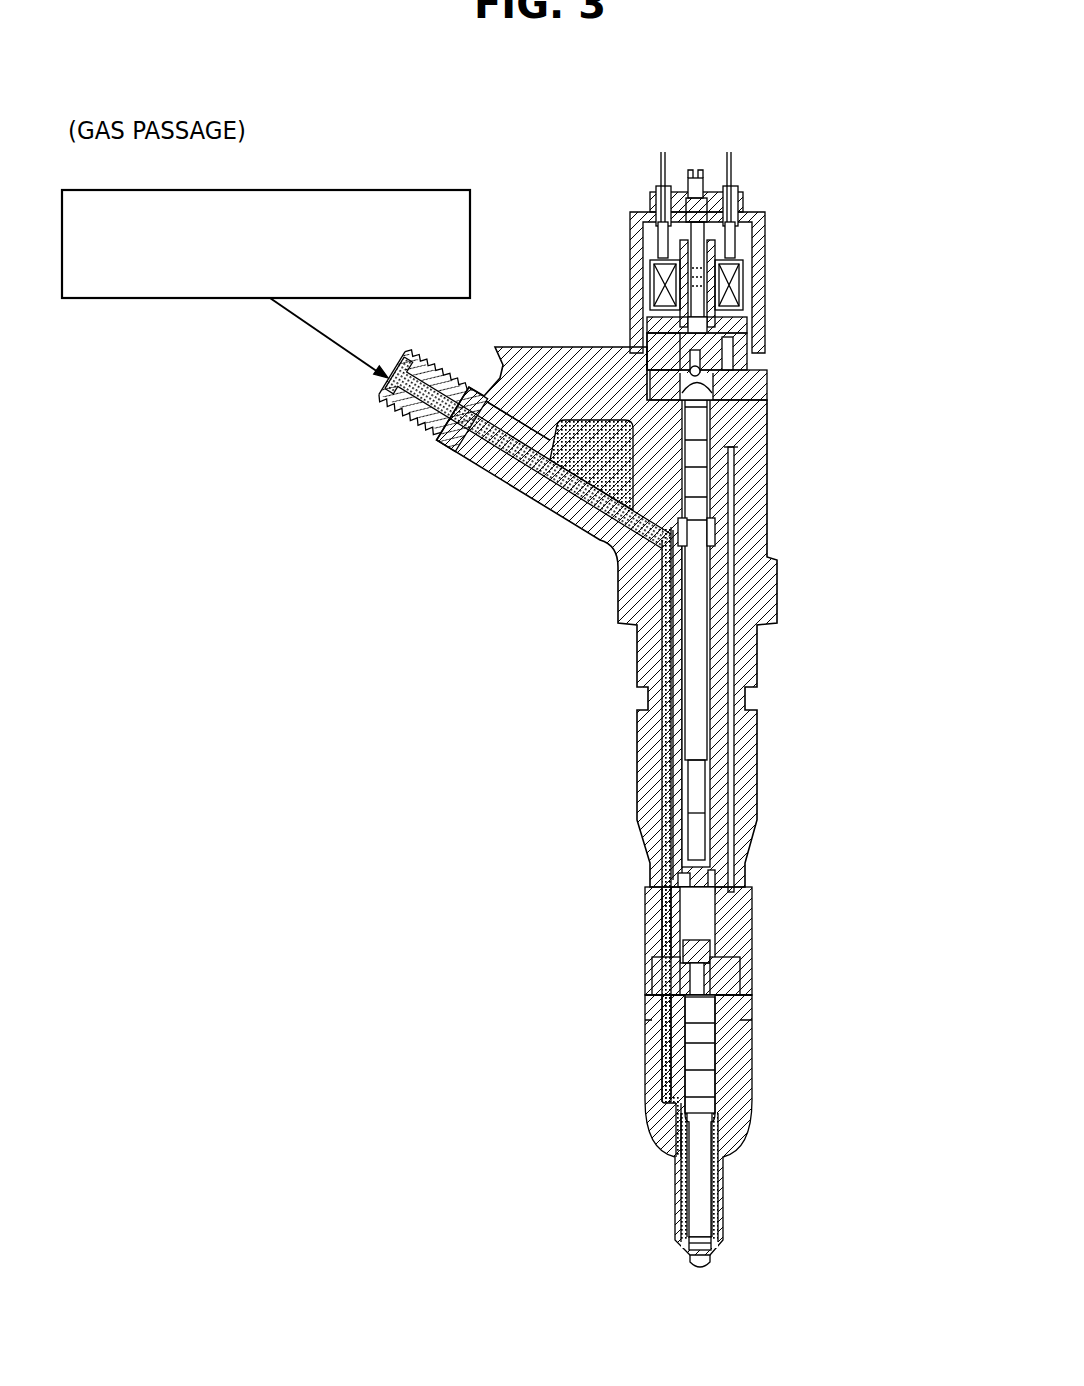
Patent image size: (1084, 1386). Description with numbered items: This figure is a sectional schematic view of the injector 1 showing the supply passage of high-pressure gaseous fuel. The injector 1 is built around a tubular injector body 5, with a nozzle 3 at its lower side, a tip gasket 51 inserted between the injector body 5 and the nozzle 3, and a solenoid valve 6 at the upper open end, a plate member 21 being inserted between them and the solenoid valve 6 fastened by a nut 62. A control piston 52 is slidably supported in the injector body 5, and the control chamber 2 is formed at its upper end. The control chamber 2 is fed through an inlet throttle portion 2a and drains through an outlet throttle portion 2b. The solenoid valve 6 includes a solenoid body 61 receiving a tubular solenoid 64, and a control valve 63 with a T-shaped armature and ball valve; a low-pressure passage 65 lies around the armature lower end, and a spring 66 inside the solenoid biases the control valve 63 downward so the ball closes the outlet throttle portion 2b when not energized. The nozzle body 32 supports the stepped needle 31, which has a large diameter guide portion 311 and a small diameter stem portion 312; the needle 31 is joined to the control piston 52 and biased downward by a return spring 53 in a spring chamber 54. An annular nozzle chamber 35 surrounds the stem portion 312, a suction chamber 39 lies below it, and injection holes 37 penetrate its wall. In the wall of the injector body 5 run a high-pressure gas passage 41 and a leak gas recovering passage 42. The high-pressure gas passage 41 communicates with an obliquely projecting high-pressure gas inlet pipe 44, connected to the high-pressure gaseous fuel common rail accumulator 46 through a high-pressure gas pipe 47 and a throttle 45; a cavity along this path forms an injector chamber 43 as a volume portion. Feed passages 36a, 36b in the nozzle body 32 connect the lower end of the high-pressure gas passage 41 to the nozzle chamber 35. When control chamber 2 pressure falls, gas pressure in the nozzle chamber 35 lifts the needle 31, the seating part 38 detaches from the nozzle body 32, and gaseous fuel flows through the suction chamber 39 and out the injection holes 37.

The injector 1 is at (818, 194).
The control chamber 2 is at (722, 397).
The inlet throttle portion 2a is at (650, 360).
The outlet throttle portion 2b is at (747, 393).
The nozzle 3 is at (686, 1135).
The injector body 5 is at (640, 667).
The solenoid valve 6 is at (726, 284).
The plate member 21 is at (747, 400).
The needle 31 is at (815, 1117).
The guide portion 311 is at (700, 1060).
The stem portion 312 is at (700, 1145).
The nozzle body 32 is at (690, 1022).
The nozzle chamber 35 is at (690, 1180).
The feed passage 36a is at (650, 1020).
The feed passage 36b is at (678, 1128).
The injection holes 37 is at (690, 1268).
The seating part 38 is at (710, 1245).
The suction chamber 39 is at (715, 1268).
The high-pressure gas passage 41 is at (660, 746).
The leak gas recovering passage 42 is at (745, 655).
The injector chamber 43 is at (590, 457).
The high-pressure gas inlet pipe 44 is at (410, 432).
The throttle 45 is at (306, 320).
The high-pressure gaseous fuel common rail accumulator 46 is at (430, 190).
The high-pressure gas pipe 47 is at (342, 358).
The tip gasket 51 is at (650, 966).
The control piston 52 is at (700, 487).
The return spring 53 is at (715, 890).
The spring chamber 54 is at (715, 930).
The solenoid body 61 is at (763, 216).
The nut 62 is at (763, 245).
The control valve 63 is at (763, 356).
The tubular solenoid 64 is at (660, 266).
The low-pressure passage 65 is at (650, 322).
The spring 66 is at (830, 322).